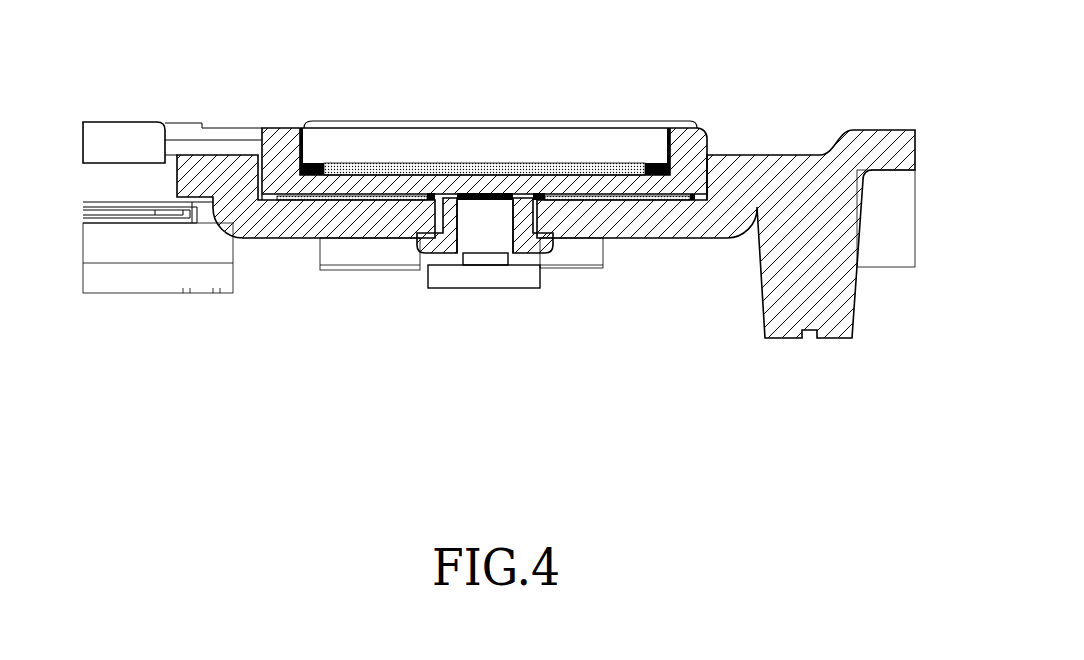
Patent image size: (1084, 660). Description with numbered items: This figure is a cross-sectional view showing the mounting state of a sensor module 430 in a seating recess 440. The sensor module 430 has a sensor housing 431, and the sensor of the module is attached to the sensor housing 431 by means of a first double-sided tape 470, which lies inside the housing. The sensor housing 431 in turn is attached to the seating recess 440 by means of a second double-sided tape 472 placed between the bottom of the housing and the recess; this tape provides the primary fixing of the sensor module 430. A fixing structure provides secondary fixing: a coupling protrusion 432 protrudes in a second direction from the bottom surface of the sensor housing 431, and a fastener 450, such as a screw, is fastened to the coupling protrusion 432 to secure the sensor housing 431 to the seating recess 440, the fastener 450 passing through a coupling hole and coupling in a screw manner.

The sensor module 430 is at (484, 112).
The sensor housing 431 is at (287, 146).
The coupling protrusion 432 is at (428, 213).
The seating recess 440 is at (268, 210).
The fastener 450 is at (485, 227).
The first double-sided tape 470 is at (438, 172).
The second double-sided tape 472 is at (627, 198).